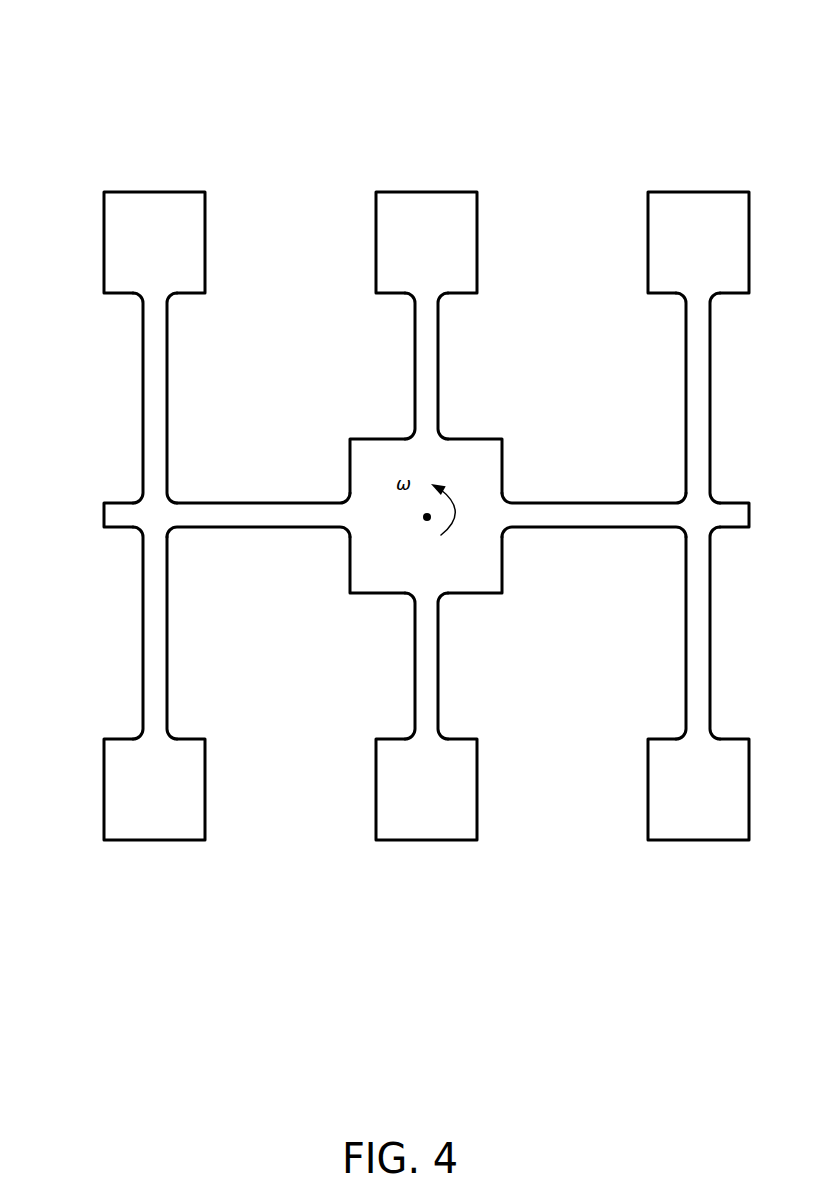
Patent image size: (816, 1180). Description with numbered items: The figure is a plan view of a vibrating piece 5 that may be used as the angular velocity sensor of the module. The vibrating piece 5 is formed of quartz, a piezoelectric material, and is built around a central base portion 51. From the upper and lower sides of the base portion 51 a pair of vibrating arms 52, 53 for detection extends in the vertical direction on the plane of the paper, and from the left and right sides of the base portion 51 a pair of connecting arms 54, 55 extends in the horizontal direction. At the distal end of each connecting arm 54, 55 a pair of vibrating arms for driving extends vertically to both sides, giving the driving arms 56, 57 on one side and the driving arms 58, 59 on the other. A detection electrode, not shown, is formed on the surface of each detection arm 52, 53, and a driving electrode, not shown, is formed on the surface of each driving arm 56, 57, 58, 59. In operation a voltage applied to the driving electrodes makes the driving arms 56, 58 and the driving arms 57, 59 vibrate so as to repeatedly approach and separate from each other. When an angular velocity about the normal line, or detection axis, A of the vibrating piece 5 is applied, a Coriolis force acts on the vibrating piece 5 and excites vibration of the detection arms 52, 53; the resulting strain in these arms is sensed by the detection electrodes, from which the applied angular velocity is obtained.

The vibrating piece 5 is at (647, 95).
The base portion 51 is at (478, 474).
The vibrating arm for detection 52 is at (448, 322).
The vibrating arm for detection 53 is at (400, 667).
The connecting arm 54 is at (215, 497).
The connecting arm 55 is at (624, 497).
The vibrating arm for driving 56 is at (132, 359).
The vibrating arm for driving 57 is at (132, 667).
The vibrating arm for driving 58 is at (722, 382).
The vibrating arm for driving 59 is at (722, 628).
The normal line (detection axis) A is at (424, 521).